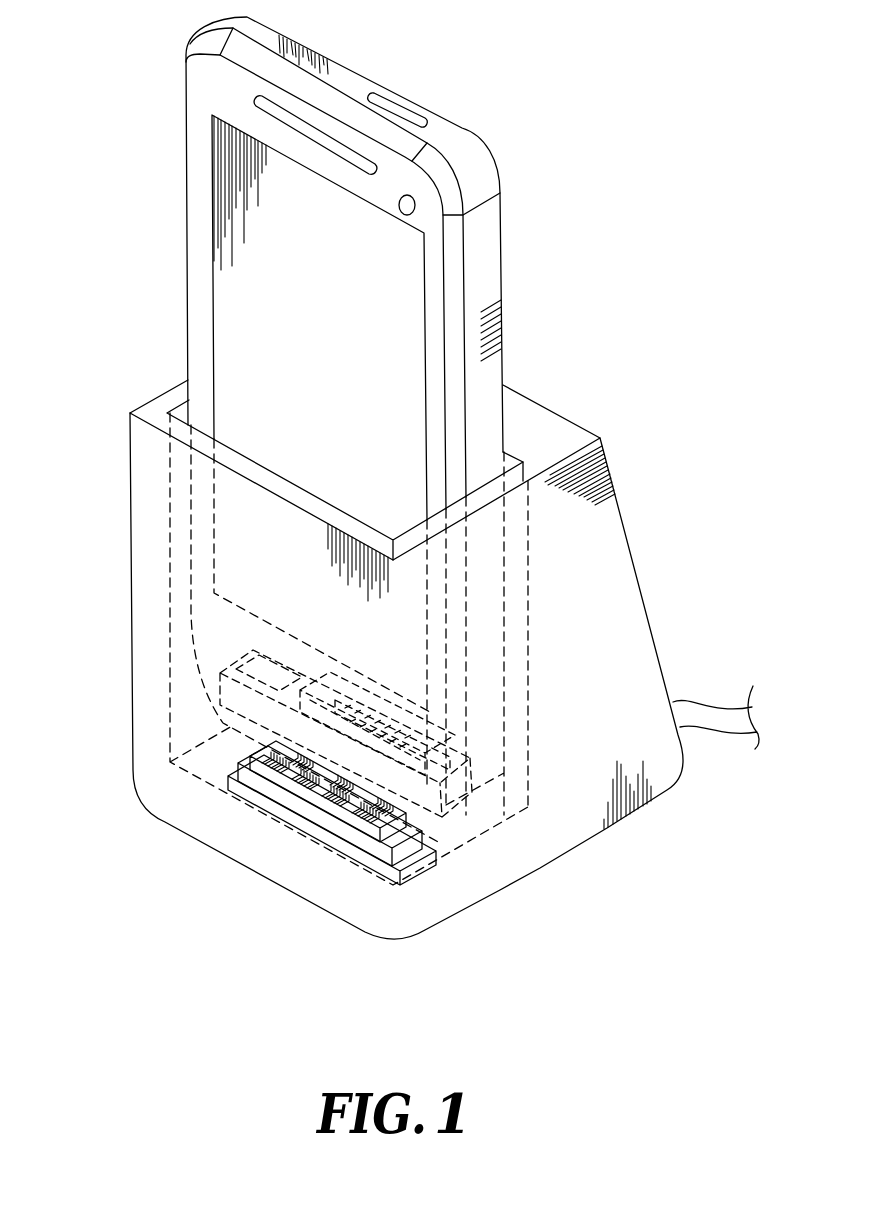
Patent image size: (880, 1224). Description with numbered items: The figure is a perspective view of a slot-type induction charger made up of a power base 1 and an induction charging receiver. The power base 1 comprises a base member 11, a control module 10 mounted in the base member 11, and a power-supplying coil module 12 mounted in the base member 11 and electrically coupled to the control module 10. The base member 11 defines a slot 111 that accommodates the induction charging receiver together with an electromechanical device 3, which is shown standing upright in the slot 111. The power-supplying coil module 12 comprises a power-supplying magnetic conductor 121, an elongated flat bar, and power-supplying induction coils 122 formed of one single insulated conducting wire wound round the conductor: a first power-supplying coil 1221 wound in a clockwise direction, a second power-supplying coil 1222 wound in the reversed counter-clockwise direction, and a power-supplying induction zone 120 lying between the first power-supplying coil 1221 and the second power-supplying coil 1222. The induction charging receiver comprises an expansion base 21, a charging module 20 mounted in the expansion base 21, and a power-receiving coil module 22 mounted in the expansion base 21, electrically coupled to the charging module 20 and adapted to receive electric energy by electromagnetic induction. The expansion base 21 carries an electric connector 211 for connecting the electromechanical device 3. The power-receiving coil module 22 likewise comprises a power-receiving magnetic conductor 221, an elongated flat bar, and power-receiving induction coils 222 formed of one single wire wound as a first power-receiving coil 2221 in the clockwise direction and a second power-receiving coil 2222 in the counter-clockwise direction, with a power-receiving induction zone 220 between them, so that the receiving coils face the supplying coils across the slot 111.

The power base 1 is at (648, 492).
The base member 11 is at (411, 617).
The slot 111 is at (510, 460).
The electromechanical device 3 is at (485, 266).
The control module 10 is at (264, 863).
The power-supplying coil module 12 is at (260, 863).
The power-supplying induction zone 120 is at (340, 827).
The power-supplying magnetic conductor 121 is at (390, 863).
The power-supplying induction coils 122 is at (219, 861).
The first power-supplying coil 1221 is at (347, 863).
The second power-supplying coil 1222 is at (297, 830).
The charging module 20 is at (404, 724).
The expansion base 21 is at (230, 708).
The electric connector 211 is at (227, 657).
The power-receiving coil module 22 is at (530, 724).
The power-receiving induction zone 220 is at (415, 720).
The power-receiving magnetic conductor 221 is at (420, 811).
The power-receiving induction coils 222 is at (553, 667).
The first power-receiving coil 2221 is at (425, 752).
The second power-receiving coil 2222 is at (405, 690).